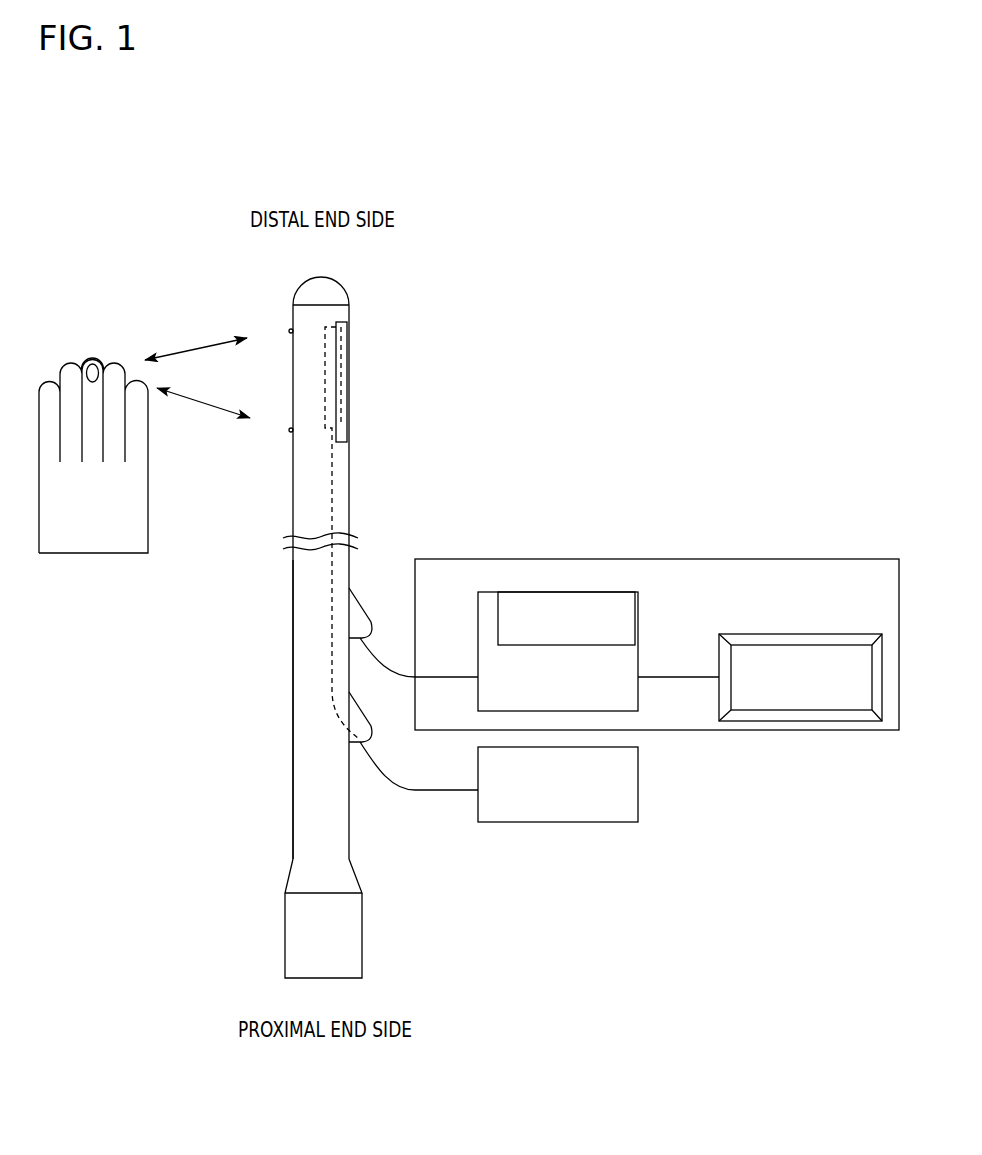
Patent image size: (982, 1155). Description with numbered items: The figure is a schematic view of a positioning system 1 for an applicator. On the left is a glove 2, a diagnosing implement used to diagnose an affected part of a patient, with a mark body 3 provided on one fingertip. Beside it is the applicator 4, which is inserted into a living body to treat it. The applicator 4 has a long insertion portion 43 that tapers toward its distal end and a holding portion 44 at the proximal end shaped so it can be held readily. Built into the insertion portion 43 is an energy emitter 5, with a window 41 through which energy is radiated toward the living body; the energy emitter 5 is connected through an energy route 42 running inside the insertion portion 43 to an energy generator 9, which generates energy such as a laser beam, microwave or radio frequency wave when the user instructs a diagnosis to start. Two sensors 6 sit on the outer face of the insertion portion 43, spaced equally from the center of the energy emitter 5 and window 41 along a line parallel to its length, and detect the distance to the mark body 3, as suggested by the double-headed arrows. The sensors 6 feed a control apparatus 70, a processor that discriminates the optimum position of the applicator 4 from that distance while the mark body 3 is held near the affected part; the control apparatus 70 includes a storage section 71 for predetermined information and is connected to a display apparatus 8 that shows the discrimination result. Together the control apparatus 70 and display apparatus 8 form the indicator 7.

The positioning system 1 is at (76, 147).
The glove 2 is at (108, 553).
The mark body 3 is at (94, 357).
The applicator 4 is at (414, 434).
The window 41 is at (349, 330).
The energy route 42 is at (334, 510).
The insertion portion 43 is at (292, 495).
The holding portion 44 is at (362, 945).
The energy emitter 5 is at (345, 392).
The sensors 6 is at (291, 430).
The indicator 7 is at (757, 559).
The control apparatus 70 is at (478, 605).
The storage section 71 is at (562, 592).
The display apparatus 8 is at (811, 634).
The energy generator 9 is at (521, 822).